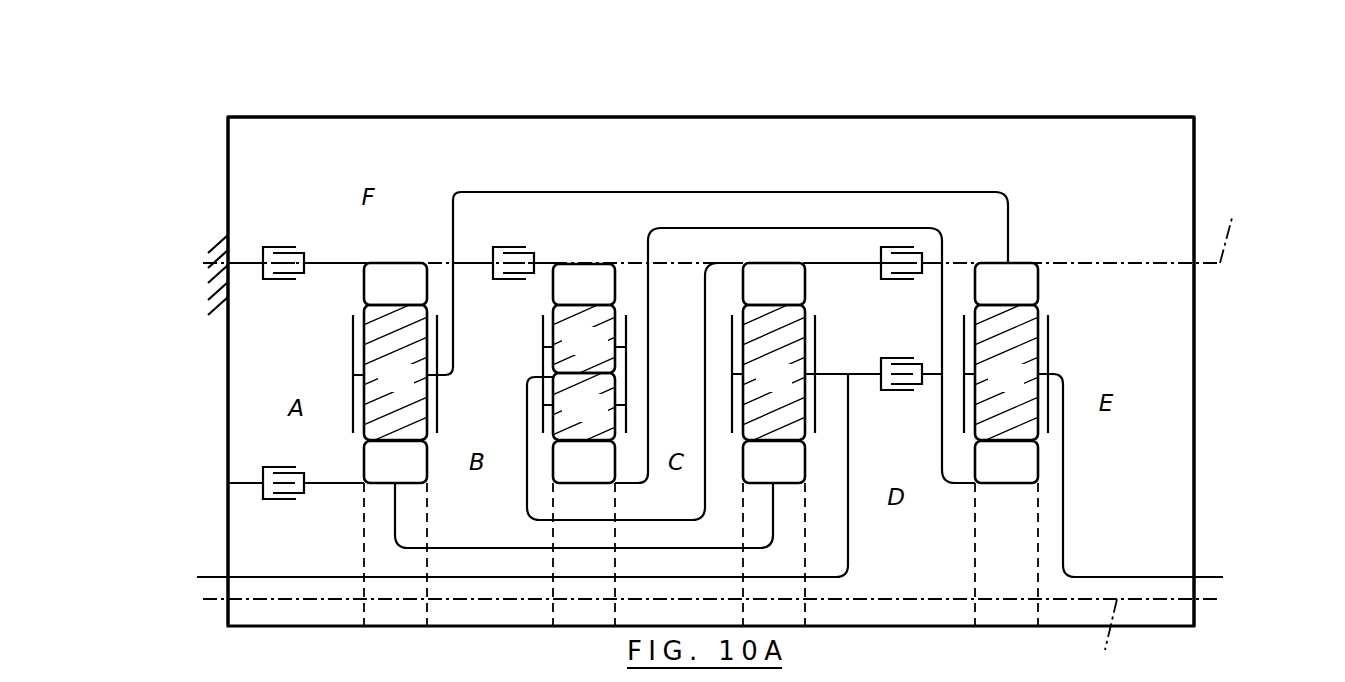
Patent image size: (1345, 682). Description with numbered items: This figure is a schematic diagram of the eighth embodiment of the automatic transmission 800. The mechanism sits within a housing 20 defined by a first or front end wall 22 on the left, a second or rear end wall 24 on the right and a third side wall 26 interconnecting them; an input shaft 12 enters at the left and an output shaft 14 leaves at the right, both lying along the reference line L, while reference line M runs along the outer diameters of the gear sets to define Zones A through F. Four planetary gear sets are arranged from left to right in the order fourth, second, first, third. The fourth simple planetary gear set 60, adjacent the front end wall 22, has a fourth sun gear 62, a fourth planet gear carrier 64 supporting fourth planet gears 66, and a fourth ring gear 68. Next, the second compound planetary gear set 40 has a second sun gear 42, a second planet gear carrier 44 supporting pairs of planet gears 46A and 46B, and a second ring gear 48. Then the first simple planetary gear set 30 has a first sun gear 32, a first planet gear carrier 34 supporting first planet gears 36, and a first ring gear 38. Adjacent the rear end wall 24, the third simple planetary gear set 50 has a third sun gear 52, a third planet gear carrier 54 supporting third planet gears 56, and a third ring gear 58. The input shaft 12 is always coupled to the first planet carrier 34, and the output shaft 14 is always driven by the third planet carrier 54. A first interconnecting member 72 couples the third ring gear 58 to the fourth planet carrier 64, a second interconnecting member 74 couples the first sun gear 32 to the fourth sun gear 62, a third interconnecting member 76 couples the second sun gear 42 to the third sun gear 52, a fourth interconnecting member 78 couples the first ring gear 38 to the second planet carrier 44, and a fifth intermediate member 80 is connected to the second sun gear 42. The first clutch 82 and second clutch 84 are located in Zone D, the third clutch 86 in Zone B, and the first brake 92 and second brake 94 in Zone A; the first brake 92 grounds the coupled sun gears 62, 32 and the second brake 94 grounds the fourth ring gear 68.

The input shaft 12 is at (218, 580).
The output shaft 14 is at (1213, 580).
The housing 20 is at (782, 100).
The first or front end wall 22 is at (228, 398).
The second or rear end wall 24 is at (1195, 380).
The third side wall 26 is at (740, 117).
The first simple planetary gear set 30 is at (807, 404).
The first sun gear 32 is at (761, 481).
The first planet gear carrier 34 is at (818, 322).
The first planet gears 36 is at (761, 389).
The first ring gear 38 is at (761, 302).
The second compound planetary gear set 40 is at (551, 404).
The second sun gear 42 is at (571, 481).
The second planet gear carrier 44 is at (545, 325).
The second planet gear 46A is at (565, 352).
The second planet gear 46B is at (565, 419).
The second ring gear 48 is at (571, 302).
The third simple planetary gear set 50 is at (1068, 373).
The third sun gear 52 is at (993, 481).
The third planet gear carrier 54 is at (1050, 322).
The third planet gears 56 is at (993, 389).
The third ring gear 58 is at (993, 302).
The fourth simple planetary gear set 60 is at (404, 404).
The fourth sun gear 62 is at (382, 481).
The fourth planet gear carrier 64 is at (440, 402).
The fourth planet gears 66 is at (382, 389).
The fourth ring gear 68 is at (382, 302).
The first interconnecting member 72 is at (640, 192).
The second interconnecting member 74 is at (588, 548).
The third interconnecting member 76 is at (782, 228).
The fourth interconnecting member 78 is at (705, 343).
The fifth intermediate member 80 is at (930, 378).
The first clutch 82 is at (888, 390).
The second clutch 84 is at (898, 247).
The third clutch 86 is at (510, 247).
The first brake 92 is at (283, 467).
The second brake 94 is at (283, 247).
The automatic transmission 800 is at (1252, 140).